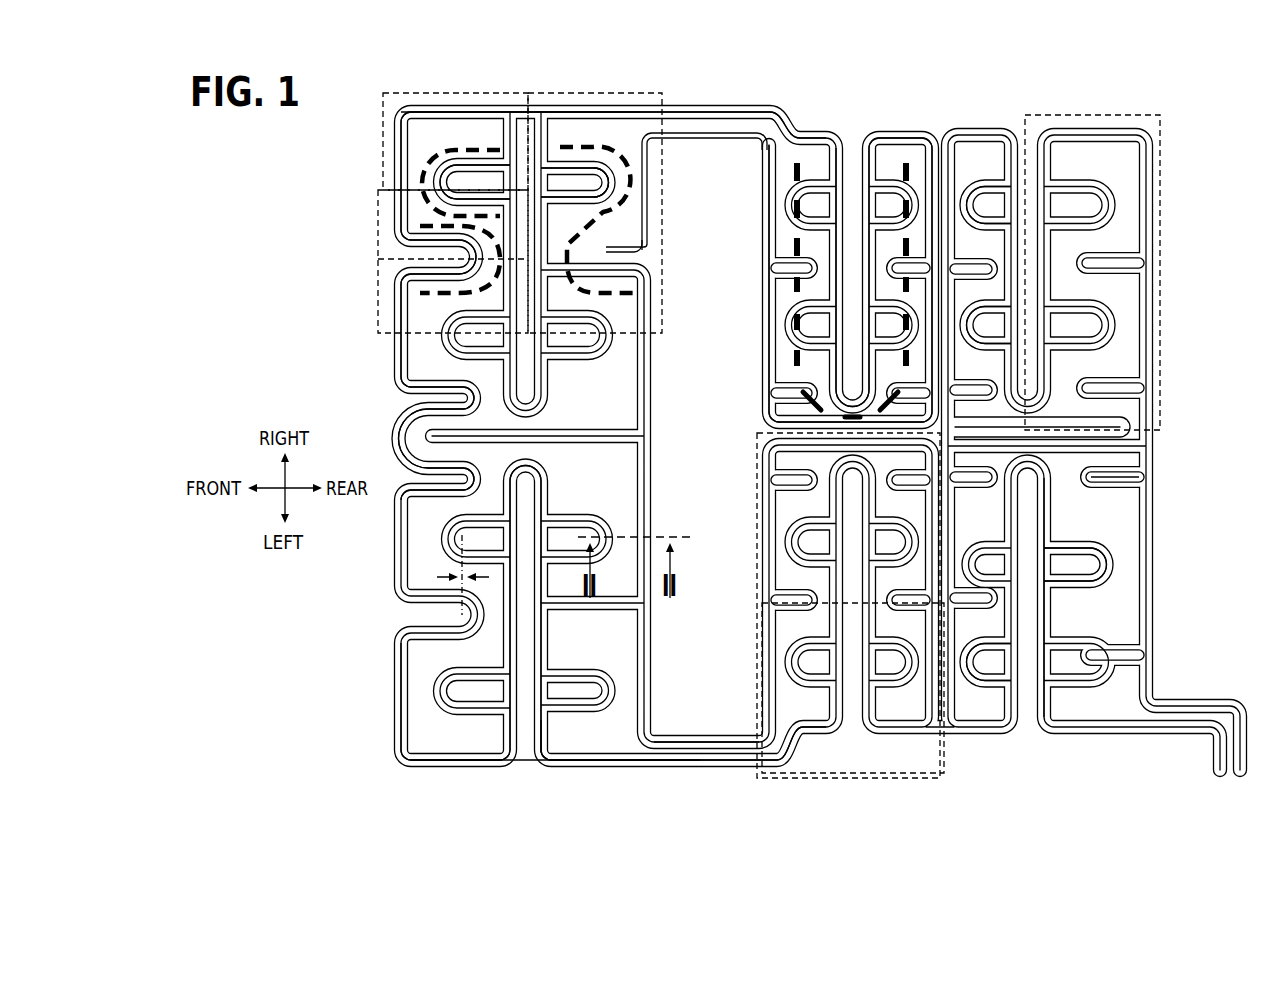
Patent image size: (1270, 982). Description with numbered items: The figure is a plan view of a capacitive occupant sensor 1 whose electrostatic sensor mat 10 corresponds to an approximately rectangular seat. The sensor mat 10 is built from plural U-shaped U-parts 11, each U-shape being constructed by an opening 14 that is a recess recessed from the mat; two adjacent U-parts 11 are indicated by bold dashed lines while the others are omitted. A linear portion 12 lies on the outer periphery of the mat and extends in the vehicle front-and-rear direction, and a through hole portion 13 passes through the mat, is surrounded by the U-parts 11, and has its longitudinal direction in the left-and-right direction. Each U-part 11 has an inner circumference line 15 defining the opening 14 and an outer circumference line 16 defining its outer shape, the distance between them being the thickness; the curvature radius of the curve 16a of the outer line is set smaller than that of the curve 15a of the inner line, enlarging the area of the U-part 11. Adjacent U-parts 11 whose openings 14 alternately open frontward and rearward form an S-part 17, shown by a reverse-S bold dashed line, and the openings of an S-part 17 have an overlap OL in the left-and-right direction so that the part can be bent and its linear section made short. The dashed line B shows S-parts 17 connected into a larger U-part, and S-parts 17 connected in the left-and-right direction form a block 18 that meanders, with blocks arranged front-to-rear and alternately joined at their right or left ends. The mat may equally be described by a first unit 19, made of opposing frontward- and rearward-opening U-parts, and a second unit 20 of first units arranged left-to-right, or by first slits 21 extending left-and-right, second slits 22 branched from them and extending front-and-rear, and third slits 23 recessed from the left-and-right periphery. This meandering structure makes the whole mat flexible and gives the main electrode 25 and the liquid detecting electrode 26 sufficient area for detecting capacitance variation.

The sensor 1 is at (900, 122).
The sensor mat 10 is at (390, 302).
The U-part 11 is at (382, 172).
The linear portion 12 is at (740, 105).
The through hole portion 13 is at (752, 160).
The opening 14 is at (483, 183).
The inner circumference line 15 is at (578, 191).
The curve of the inner circumference line 15a is at (597, 182).
The outer circumference line 16 is at (648, 205).
The curve of the outer circumference line 16a is at (648, 250).
The S-part 17 is at (538, 84).
The block 18 is at (1140, 115).
The first unit 19 is at (893, 777).
The second unit 20 is at (937, 774).
The first slit 21 is at (906, 168).
The second slit 22 is at (962, 178).
The third slit 23 is at (400, 395).
The main electrode 25 is at (626, 731).
The liquid detecting electrode 26 is at (547, 736).
The dashed line B is at (908, 172).
The overlap OL is at (455, 611).